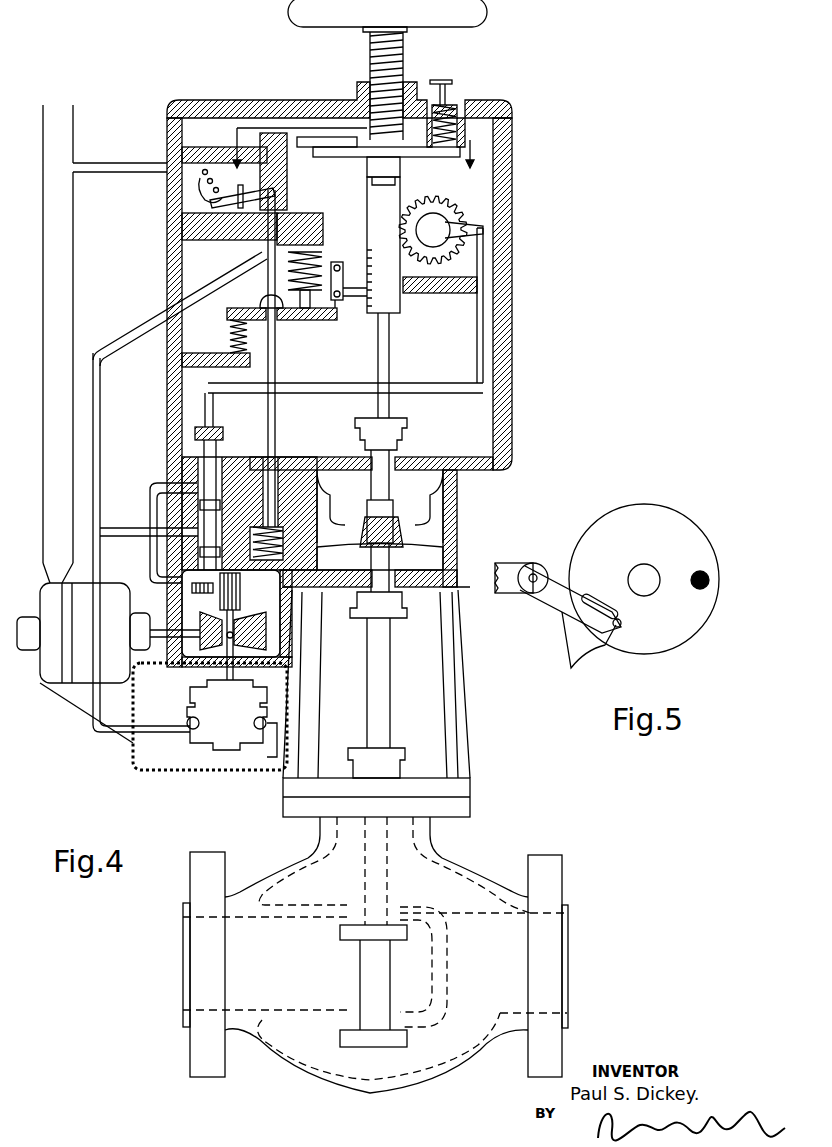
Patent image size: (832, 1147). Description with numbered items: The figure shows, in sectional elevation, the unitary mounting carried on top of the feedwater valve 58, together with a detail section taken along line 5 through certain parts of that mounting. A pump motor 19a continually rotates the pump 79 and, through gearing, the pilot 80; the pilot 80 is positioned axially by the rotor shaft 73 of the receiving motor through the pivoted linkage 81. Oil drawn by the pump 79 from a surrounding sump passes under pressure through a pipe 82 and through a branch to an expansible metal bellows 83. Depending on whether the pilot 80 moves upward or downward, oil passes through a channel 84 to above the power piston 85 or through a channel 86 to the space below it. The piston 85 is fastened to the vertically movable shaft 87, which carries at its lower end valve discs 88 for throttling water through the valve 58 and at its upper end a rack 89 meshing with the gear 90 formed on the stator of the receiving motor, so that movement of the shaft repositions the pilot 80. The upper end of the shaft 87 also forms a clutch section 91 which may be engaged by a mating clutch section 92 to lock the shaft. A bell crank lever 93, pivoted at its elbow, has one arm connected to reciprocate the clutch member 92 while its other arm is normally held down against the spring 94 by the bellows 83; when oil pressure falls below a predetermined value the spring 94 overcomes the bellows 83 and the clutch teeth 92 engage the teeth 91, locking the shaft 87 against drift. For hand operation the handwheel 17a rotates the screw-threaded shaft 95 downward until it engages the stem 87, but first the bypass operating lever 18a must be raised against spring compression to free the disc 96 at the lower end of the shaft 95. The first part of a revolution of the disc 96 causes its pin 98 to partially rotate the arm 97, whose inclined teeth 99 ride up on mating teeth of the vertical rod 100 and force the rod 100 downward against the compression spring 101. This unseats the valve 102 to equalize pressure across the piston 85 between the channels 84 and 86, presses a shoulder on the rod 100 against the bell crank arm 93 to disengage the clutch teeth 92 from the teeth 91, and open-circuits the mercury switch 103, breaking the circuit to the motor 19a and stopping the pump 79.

In FIG. 4, the handwheel 17a is at (306, 28).
In FIG. 4, the screw-threaded shaft 95 is at (368, 58).
In FIG. 5, the screw-threaded shaft 95 is at (645, 565).
In FIG. 4, the bypass operating lever 18a is at (453, 83).
In FIG. 5, the bypass operating lever 18a is at (707, 588).
In FIG. 4, the section line 5 is at (354, 179).
In FIG. 4, the mercury switch 103 is at (184, 212).
In FIG. 4, the inclined teeth 99 is at (290, 197).
In FIG. 4, the arm 97 is at (312, 154).
In FIG. 5, the arm 97 is at (560, 627).
In FIG. 4, the disc 96 is at (352, 150).
In FIG. 5, the disc 96 is at (712, 556).
In FIG. 4, the pin 98 is at (370, 176).
In FIG. 5, the pin 98 is at (622, 625).
In FIG. 4, the rack 89 is at (398, 182).
In FIG. 4, the gear 90 is at (420, 198).
In FIG. 4, the rotor shaft 73 is at (455, 225).
In FIG. 4, the expansible metal bellows 83 is at (318, 252).
In FIG. 4, the mating clutch section 92 is at (330, 266).
In FIG. 4, the clutch section 91 is at (383, 245).
In FIG. 4, the spring 94 is at (230, 336).
In FIG. 4, the bell crank lever 93 is at (335, 320).
In FIG. 4, the rod 100 is at (277, 362).
In FIG. 5, the rod 100 is at (536, 553).
In FIG. 4, the pivoted linkage 81 is at (480, 372).
In FIG. 4, the pilot 80 is at (214, 460).
In FIG. 4, the pipe 82 is at (109, 505).
In FIG. 4, the channel 84 is at (318, 482).
In FIG. 4, the power piston 85 is at (362, 536).
In FIG. 4, the channel 86 is at (318, 558).
In FIG. 4, the valve 102 is at (280, 525).
In FIG. 4, the compression spring 101 is at (236, 585).
In FIG. 4, the shaft 87 is at (388, 691).
In FIG. 4, the pump 79 is at (195, 740).
In FIG. 4, the pump motor 19a is at (40, 690).
In FIG. 4, the valve discs 88 is at (358, 955).
In FIG. 4, the valve 58 is at (462, 1068).